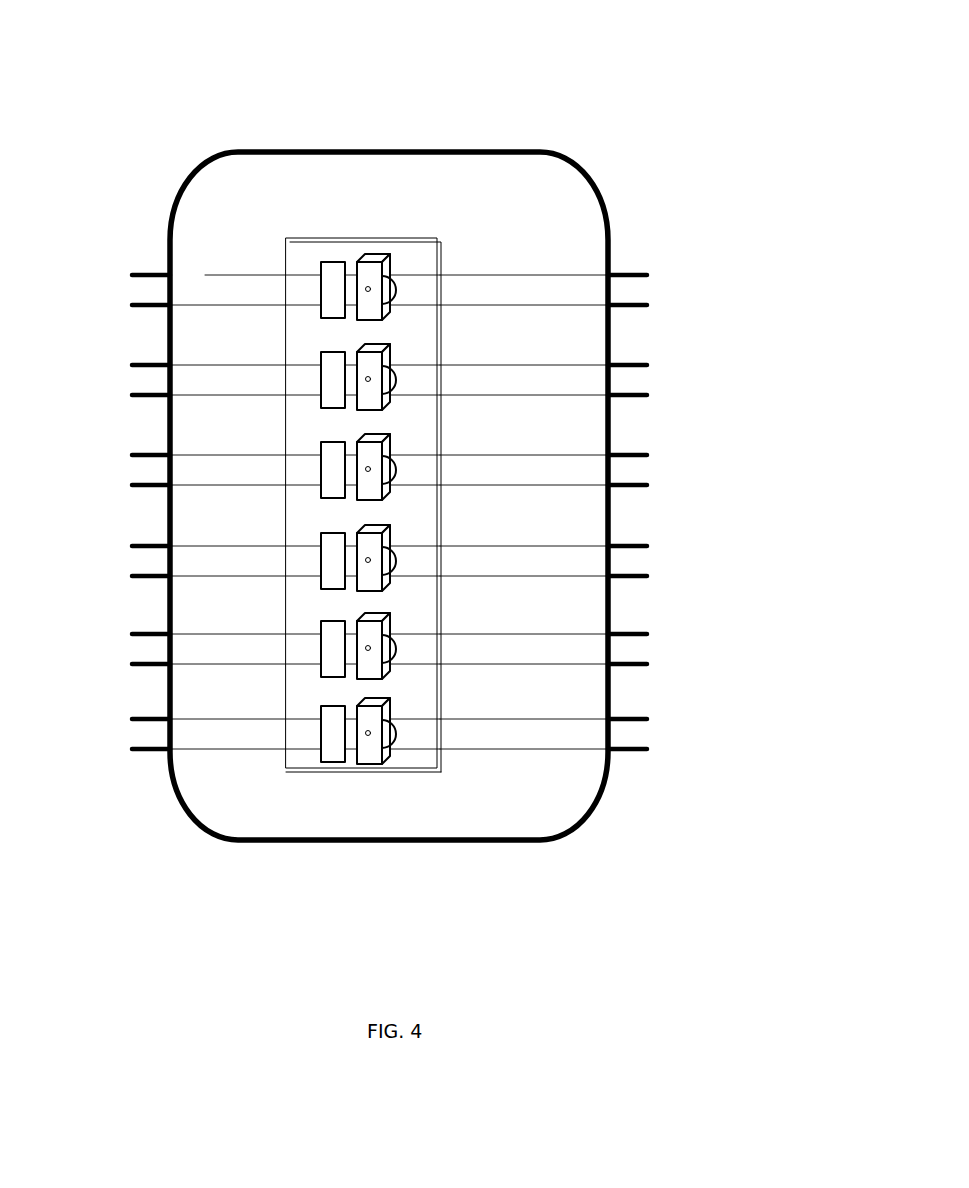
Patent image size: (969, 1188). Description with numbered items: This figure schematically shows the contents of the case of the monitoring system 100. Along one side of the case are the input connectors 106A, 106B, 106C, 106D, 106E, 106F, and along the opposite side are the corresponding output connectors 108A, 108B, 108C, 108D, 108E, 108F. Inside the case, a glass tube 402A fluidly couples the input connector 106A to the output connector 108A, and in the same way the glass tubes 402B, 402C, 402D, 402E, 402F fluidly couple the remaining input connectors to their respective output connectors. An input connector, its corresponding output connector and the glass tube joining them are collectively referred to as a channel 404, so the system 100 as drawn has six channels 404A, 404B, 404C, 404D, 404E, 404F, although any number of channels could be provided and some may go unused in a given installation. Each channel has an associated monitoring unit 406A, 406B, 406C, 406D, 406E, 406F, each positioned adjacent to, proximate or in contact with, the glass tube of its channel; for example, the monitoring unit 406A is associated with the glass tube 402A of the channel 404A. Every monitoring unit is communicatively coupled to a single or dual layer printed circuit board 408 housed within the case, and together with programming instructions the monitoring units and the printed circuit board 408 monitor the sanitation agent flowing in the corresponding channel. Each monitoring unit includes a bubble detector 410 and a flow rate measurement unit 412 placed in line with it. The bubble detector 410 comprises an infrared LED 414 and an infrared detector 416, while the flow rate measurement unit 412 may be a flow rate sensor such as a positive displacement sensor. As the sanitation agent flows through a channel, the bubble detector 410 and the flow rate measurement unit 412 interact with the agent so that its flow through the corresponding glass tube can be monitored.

The system 100 is at (614, 84).
The input connector 106A is at (637, 275).
The input connector 106B is at (632, 396).
The input connector 106C is at (630, 488).
The input connector 106D is at (630, 580).
The input connector 106E is at (630, 668).
The input connector 106F is at (630, 752).
The output connector 108A is at (133, 275).
The output connector 108B is at (131, 364).
The output connector 108C is at (132, 455).
The output connector 108D is at (132, 546).
The output connector 108E is at (132, 634).
The output connector 108F is at (132, 719).
The glass tube 402A is at (188, 307).
The glass tube 402B is at (185, 396).
The glass tube 402C is at (185, 487).
The glass tube 402D is at (185, 578).
The glass tube 402E is at (185, 666).
The glass tube 402F is at (185, 750).
The channel 404 is at (466, 768).
The channel 404A is at (678, 295).
The channel 404B is at (684, 366).
The channel 404C is at (668, 477).
The channel 404D is at (696, 558).
The channel 404E is at (658, 652).
The channel 404F is at (650, 735).
The monitoring unit 406A is at (298, 177).
The monitoring unit 406B is at (330, 341).
The monitoring unit 406C is at (324, 436).
The monitoring unit 406D is at (324, 526).
The monitoring unit 406E is at (328, 617).
The monitoring unit 406F is at (316, 826).
The printed circuit board 408 is at (408, 254).
The bubble detector 410 is at (383, 768).
The flow rate measurement unit 412 is at (333, 730).
The infrared LED 414 is at (367, 286).
The infrared detector 416 is at (377, 258).